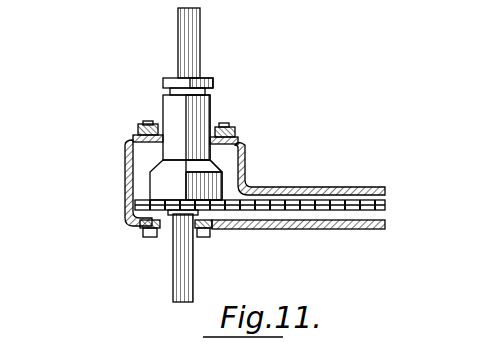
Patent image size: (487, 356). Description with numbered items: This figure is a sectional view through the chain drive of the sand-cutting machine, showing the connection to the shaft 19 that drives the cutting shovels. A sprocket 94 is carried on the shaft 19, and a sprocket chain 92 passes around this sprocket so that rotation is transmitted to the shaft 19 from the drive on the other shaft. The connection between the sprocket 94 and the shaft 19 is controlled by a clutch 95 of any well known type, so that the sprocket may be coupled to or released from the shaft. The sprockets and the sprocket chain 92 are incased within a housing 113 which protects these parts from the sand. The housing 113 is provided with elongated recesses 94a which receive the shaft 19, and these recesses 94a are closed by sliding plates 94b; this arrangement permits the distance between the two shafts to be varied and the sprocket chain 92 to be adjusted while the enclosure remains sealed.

The shaft 19 is at (193, 40).
The sprocket chain 92 is at (332, 205).
The sprocket 94 is at (134, 203).
The elongated recesses 94a is at (148, 140).
The sliding plates 94b is at (140, 127).
The clutch 95 is at (200, 184).
The housing 113 is at (356, 232).